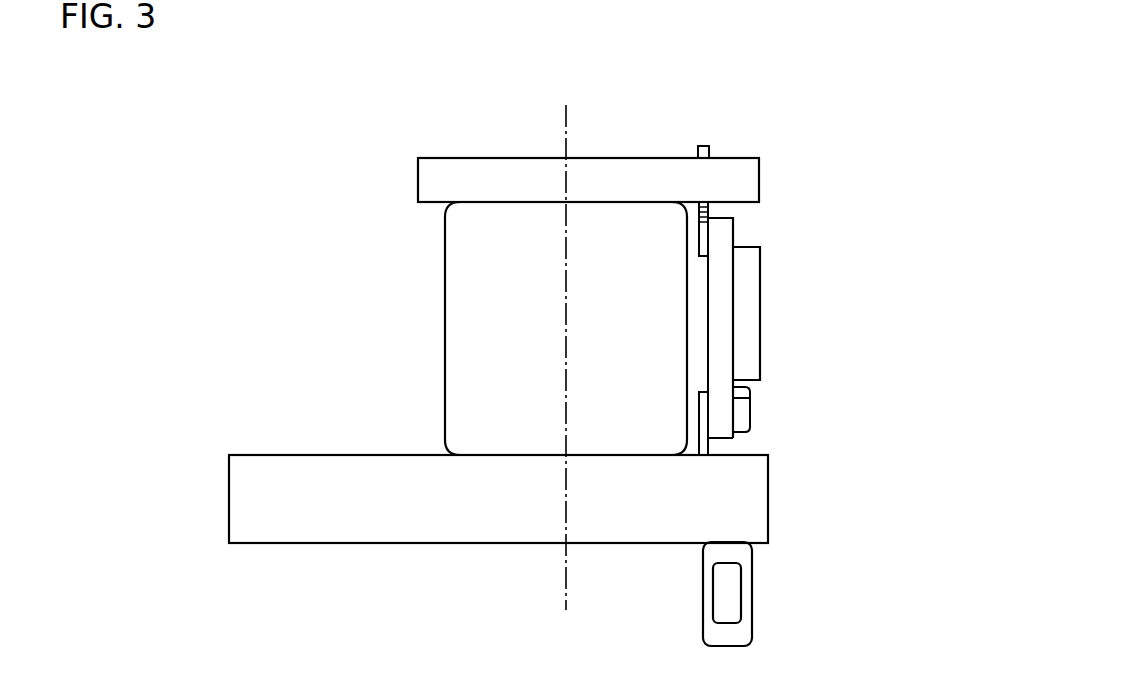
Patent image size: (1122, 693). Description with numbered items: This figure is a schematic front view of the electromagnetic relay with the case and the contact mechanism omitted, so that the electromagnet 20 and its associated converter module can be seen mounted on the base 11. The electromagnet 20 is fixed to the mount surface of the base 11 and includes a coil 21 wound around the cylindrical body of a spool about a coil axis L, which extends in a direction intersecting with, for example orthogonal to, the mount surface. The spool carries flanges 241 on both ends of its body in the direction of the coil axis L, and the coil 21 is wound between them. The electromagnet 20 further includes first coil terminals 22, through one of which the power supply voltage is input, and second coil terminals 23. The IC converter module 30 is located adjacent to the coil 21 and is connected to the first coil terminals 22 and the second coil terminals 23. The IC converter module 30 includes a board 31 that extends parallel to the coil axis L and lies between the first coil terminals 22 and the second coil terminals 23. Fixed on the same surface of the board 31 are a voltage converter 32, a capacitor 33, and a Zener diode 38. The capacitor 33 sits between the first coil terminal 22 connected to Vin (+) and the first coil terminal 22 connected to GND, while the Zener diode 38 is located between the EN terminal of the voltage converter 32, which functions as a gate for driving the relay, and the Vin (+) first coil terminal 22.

The base 11 is at (228, 499).
The electromagnet 20 is at (517, 328).
The coil 21 is at (468, 263).
The first coil terminal 22 is at (703, 437).
The second coil terminal 23 is at (703, 238).
The flange 241 is at (645, 174).
The IC converter module 30 is at (781, 328).
The board 31 is at (720, 272).
The voltage converter 32 is at (745, 315).
The capacitor 33 is at (741, 418).
The Zener diode 38 is at (746, 392).
The coil axis L is at (565, 118).